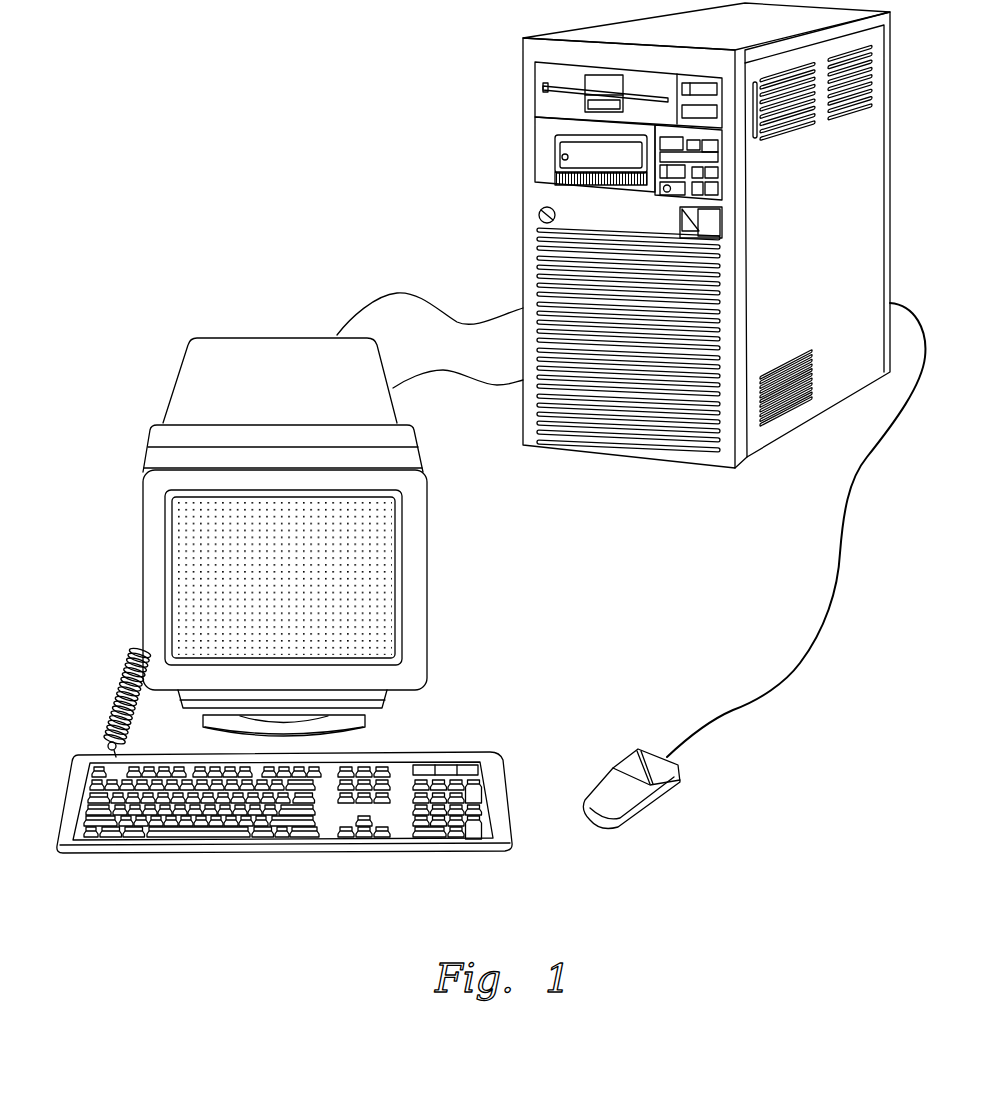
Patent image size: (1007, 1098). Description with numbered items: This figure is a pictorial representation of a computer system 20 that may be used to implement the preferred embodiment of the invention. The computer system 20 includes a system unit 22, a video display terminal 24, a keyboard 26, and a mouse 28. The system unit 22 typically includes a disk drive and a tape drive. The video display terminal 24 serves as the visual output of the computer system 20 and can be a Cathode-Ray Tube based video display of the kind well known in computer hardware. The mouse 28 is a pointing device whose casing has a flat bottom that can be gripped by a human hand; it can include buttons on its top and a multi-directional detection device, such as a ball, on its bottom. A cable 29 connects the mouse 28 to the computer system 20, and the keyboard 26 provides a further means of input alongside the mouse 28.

The computer system 20 is at (294, 201).
The system unit 22 is at (543, 195).
The video display terminal 24 is at (273, 355).
The keyboard 26 is at (312, 847).
The mouse 28 is at (648, 803).
The cable 29 is at (768, 692).